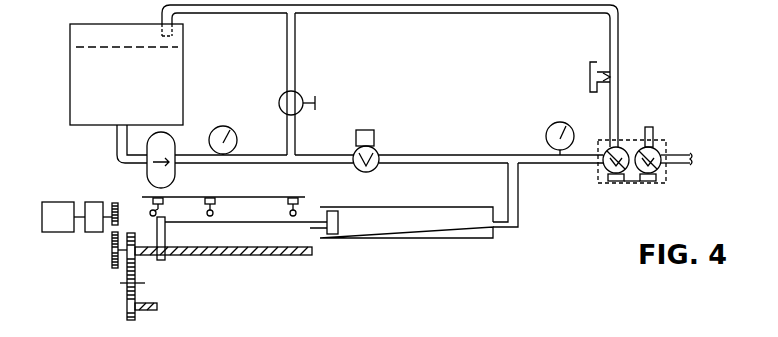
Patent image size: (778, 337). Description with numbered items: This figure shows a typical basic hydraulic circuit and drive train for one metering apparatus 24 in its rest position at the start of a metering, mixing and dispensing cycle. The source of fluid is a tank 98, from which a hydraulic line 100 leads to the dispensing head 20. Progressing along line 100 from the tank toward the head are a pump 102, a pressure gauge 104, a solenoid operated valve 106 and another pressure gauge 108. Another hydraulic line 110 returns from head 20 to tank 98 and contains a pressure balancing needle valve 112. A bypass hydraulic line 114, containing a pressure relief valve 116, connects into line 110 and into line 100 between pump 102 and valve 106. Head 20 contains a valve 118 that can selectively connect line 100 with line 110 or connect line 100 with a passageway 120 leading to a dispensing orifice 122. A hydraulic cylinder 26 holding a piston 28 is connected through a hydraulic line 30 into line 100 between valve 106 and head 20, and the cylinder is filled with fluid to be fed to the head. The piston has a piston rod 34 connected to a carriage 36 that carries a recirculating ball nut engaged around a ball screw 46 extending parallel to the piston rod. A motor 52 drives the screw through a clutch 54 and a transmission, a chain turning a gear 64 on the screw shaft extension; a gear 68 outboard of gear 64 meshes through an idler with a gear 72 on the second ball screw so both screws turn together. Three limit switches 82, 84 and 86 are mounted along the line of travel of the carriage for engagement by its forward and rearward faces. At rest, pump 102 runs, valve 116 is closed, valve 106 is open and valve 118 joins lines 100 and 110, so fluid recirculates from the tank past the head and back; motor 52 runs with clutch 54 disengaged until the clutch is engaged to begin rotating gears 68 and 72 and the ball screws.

The tank 98 is at (70, 72).
The pump 102 is at (177, 140).
The pressure gauge 104 is at (232, 125).
The bypass hydraulic line 114 is at (296, 37).
The pressure relief valve 116 is at (300, 94).
The solenoid operated valve 106 is at (378, 147).
The hydraulic line 100 is at (432, 155).
The pressure gauge 108 is at (548, 127).
The hydraulic line 110 is at (620, 40).
The pressure balancing needle valve 112 is at (590, 72).
The valve 118 is at (633, 142).
The dispensing head 20 is at (684, 133).
The passageway 120 is at (622, 182).
The dispensing orifice 122 is at (634, 182).
The hydraulic line 30 is at (519, 200).
The hydraulic cylinder 26 is at (468, 236).
The piston 28 is at (333, 238).
The apparatus 24 is at (460, 258).
The piston rod 34 is at (312, 256).
The carriage 36 is at (166, 232).
The limit switch 82 is at (165, 198).
The limit switch 84 is at (215, 198).
The limit switch 86 is at (297, 199).
The motor 52 is at (55, 202).
The clutch 54 is at (93, 202).
The gear 64 is at (112, 250).
The gear 68 is at (135, 268).
The gear 72 is at (127, 308).
The ball screw 46 is at (160, 305).